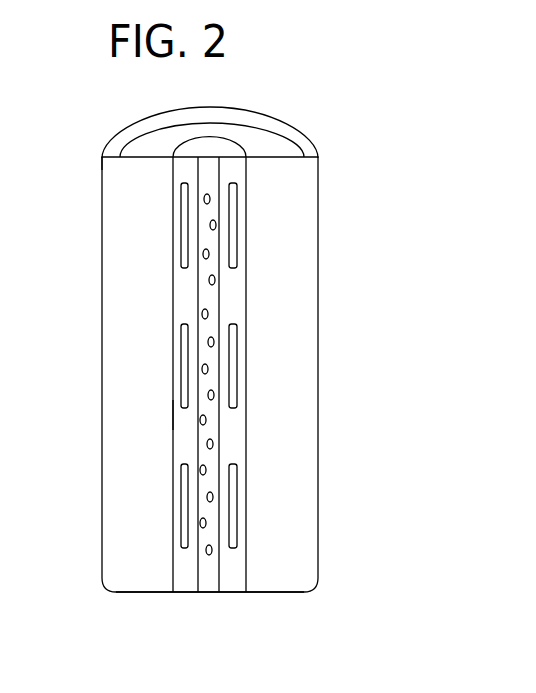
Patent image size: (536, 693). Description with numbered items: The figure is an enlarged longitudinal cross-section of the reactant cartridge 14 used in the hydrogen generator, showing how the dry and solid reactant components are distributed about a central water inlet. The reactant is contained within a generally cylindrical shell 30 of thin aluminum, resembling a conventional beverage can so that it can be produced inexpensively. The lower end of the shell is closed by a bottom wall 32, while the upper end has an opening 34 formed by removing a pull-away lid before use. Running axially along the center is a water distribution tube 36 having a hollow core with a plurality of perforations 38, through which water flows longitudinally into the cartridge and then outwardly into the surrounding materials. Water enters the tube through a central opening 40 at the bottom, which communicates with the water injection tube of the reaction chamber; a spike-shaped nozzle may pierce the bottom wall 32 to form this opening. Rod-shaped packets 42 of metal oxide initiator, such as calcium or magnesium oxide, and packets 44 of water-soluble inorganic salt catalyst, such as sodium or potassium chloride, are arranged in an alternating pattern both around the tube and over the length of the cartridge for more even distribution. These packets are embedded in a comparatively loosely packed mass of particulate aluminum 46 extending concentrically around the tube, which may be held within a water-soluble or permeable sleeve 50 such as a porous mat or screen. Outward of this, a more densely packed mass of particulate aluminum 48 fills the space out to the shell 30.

The reactant cartridge 14 is at (83, 221).
The cylindrical shell 30 is at (334, 298).
The bottom wall 32 is at (290, 594).
The opening 34 is at (307, 113).
The water distribution tube 36 is at (189, 596).
The perforations 38 is at (218, 515).
The central opening 40 is at (205, 606).
The packets of metal oxide initiator 42 is at (171, 211).
The packets of water-soluble inorganic salt catalyst 44 is at (254, 210).
The loosely packed particulate aluminum 46 is at (173, 291).
The densely packed particulate aluminum 48 is at (137, 382).
The sleeve 50 is at (158, 413).